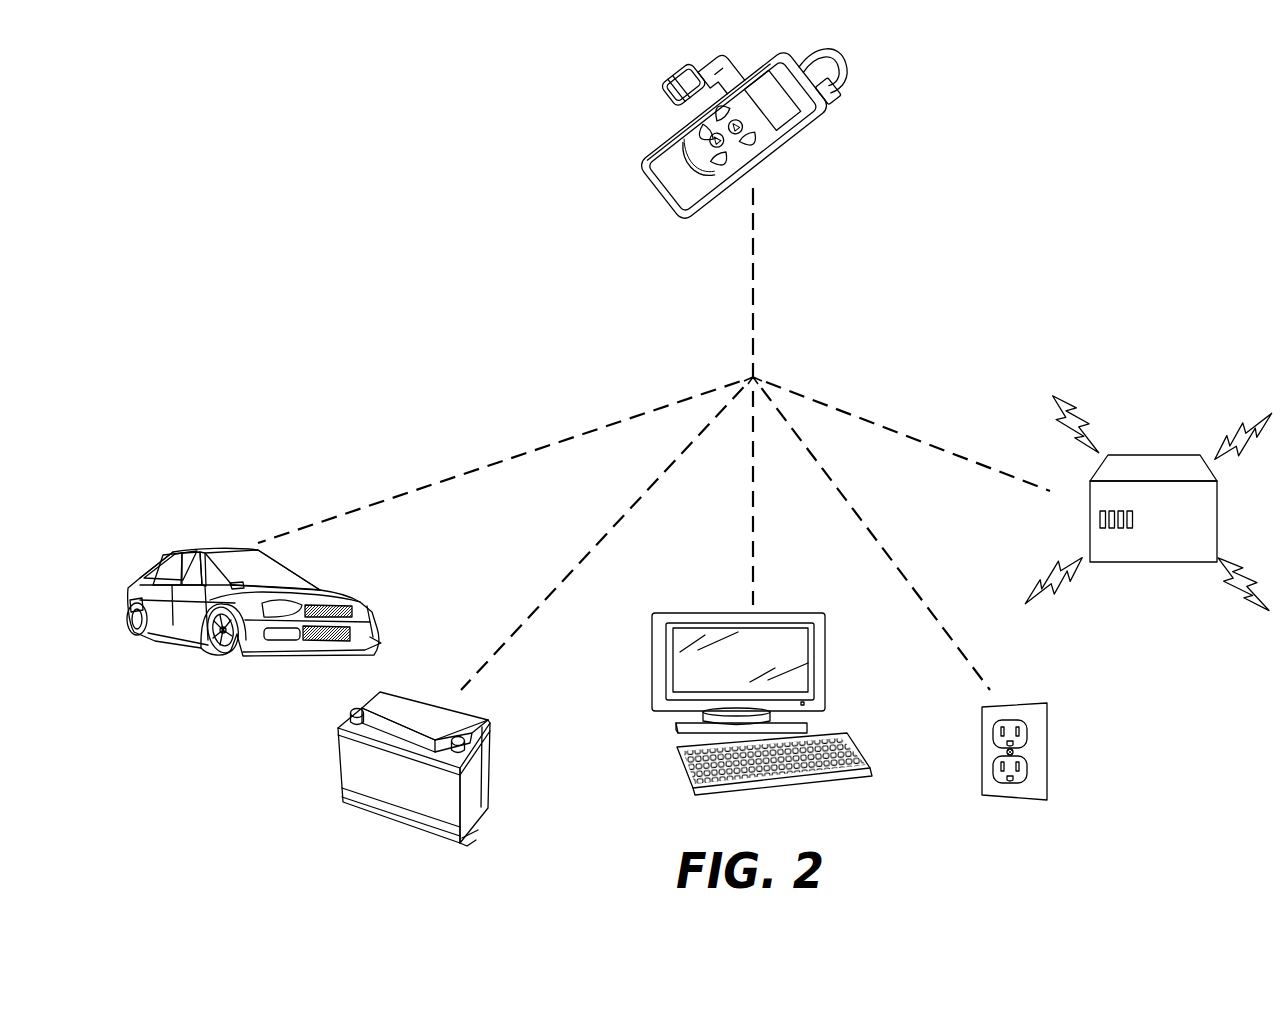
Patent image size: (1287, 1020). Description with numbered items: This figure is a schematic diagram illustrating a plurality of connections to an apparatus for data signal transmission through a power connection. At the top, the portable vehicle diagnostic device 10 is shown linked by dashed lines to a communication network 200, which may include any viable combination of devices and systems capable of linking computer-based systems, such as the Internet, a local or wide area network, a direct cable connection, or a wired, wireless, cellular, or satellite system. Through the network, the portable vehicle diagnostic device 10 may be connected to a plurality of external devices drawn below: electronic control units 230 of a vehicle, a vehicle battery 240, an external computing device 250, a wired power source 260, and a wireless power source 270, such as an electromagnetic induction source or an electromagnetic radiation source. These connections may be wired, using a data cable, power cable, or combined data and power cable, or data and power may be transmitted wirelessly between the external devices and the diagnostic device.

The portable vehicle diagnostic device 10 is at (643, 130).
The communication network 200 is at (747, 296).
The electronic control units of a vehicle 230 is at (193, 666).
The vehicle battery 240 is at (359, 828).
The external computing device 250 is at (664, 772).
The wired power source 260 is at (1011, 804).
The wireless power source 270 is at (1167, 577).